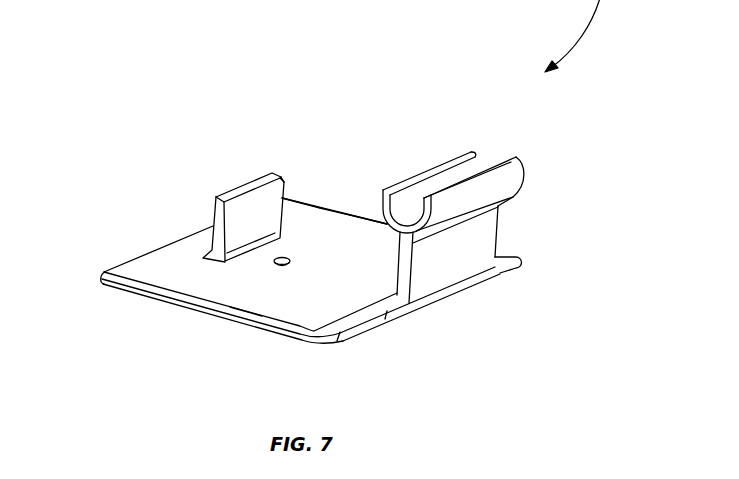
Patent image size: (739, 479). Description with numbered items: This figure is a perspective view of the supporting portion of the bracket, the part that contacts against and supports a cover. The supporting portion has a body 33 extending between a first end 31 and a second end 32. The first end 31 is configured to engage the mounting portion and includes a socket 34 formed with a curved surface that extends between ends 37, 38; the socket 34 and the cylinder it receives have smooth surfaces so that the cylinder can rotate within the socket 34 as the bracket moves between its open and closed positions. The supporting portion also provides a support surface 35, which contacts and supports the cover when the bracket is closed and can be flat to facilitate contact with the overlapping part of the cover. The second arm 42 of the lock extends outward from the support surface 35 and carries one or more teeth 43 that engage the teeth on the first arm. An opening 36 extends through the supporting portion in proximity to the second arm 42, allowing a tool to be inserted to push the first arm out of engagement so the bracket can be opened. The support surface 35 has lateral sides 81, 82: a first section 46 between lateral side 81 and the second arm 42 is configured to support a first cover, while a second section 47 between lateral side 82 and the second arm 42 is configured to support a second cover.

The first end 31 is at (487, 192).
The second end 32 is at (290, 259).
The body 33 is at (262, 303).
The socket 34 is at (475, 150).
The support surface 35 is at (302, 227).
The opening 36 is at (275, 265).
The end of socket 37 is at (430, 138).
The end of socket 38 is at (495, 157).
The second arm 42 is at (208, 193).
The teeth 43 is at (266, 197).
The first section 46 is at (297, 298).
The second section 47 is at (323, 225).
The lateral side 81 is at (140, 298).
The lateral side 82 is at (297, 234).